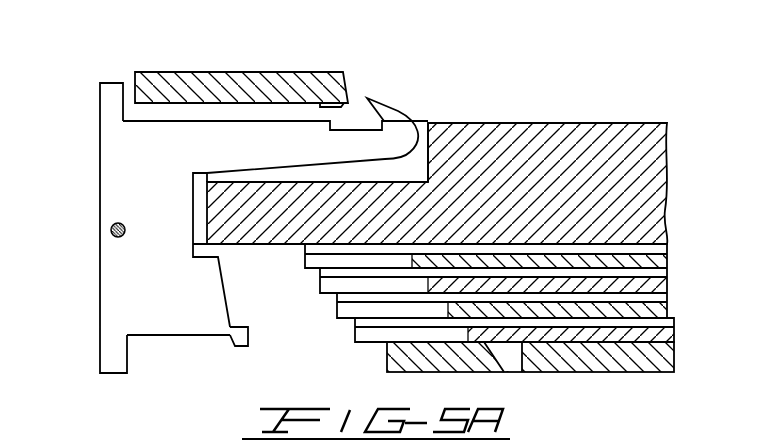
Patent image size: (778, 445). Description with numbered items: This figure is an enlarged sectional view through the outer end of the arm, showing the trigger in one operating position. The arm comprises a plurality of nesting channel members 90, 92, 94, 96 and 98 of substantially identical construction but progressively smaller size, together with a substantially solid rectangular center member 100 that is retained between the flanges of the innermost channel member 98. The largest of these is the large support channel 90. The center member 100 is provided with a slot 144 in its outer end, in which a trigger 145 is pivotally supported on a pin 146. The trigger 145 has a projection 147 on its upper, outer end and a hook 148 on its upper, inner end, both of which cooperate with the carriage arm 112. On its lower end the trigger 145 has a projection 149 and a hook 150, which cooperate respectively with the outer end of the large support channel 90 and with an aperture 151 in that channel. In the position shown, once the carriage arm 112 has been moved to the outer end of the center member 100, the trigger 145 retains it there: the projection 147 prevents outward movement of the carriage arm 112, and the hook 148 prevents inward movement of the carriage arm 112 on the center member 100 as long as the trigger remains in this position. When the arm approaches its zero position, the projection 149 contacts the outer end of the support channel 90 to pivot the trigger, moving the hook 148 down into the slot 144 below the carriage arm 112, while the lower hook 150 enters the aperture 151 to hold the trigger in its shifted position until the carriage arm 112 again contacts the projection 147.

The center member 100 is at (571, 132).
The slot 144 is at (427, 122).
The channel member 98 is at (313, 259).
The channel member 96 is at (326, 284).
The channel member 94 is at (344, 310).
The channel member 92 is at (372, 331).
The large support channel 90 is at (401, 366).
The aperture 151 is at (490, 358).
The carriage arm 112 is at (222, 86).
The trigger 145 is at (122, 163).
The projection 147 is at (110, 93).
The projection 149 is at (108, 360).
The hook 150 is at (238, 347).
The hook 148 is at (377, 105).
The pin 146 is at (108, 231).